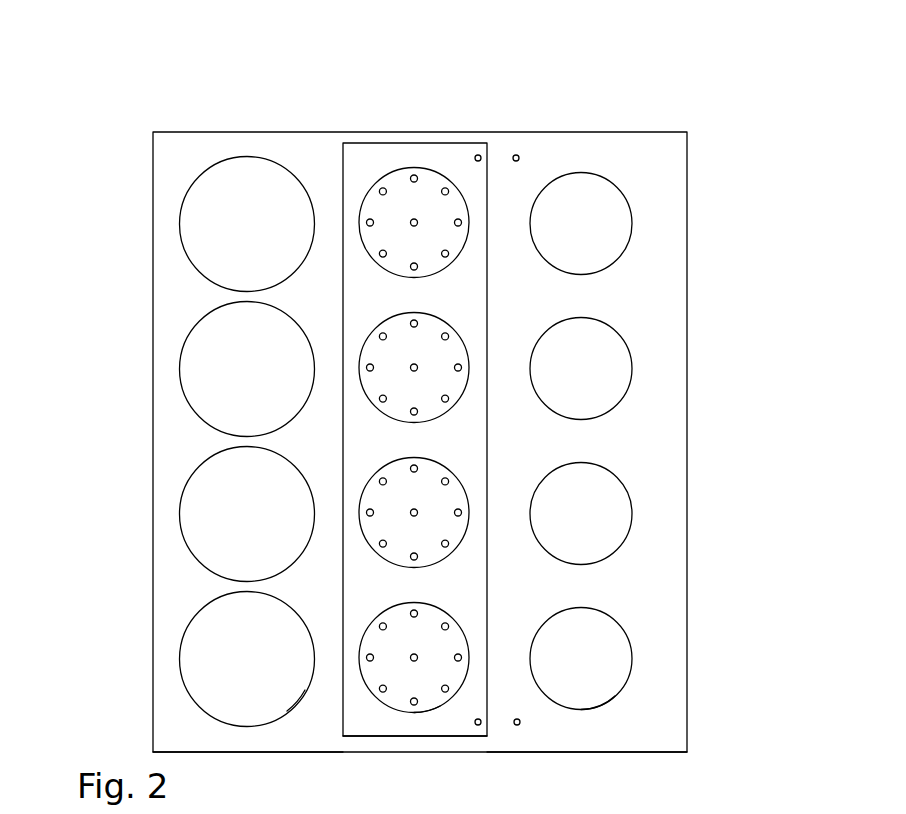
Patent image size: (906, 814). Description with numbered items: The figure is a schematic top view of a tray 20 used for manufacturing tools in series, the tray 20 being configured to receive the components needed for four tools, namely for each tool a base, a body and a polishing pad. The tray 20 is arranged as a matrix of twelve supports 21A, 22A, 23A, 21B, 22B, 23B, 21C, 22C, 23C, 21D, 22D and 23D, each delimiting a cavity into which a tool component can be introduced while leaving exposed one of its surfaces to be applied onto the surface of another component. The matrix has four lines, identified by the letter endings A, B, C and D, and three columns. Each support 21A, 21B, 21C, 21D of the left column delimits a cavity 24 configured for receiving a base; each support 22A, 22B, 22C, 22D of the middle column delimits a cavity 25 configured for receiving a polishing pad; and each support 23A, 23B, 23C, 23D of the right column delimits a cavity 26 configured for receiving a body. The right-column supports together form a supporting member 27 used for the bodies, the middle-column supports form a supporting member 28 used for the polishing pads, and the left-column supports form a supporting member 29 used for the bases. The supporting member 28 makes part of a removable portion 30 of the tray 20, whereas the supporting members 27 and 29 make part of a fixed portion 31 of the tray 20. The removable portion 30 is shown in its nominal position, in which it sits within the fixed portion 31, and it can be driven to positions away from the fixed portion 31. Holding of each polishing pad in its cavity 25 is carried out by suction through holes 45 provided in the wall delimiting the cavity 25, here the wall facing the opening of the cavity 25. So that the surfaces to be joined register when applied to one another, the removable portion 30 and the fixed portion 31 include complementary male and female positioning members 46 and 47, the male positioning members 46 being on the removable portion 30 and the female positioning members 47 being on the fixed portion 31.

The tray 20 is at (128, 108).
The support 21A is at (163, 647).
The support 21B is at (163, 508).
The support 21C is at (163, 370).
The support 21D is at (163, 230).
The support 22A is at (442, 678).
The support 22B is at (479, 507).
The support 22C is at (480, 367).
The support 22D is at (480, 225).
The support 23A is at (640, 655).
The support 23B is at (640, 508).
The support 23C is at (640, 360).
The support 23D is at (640, 207).
The cavity 24 is at (290, 697).
The cavity 25 is at (430, 700).
The cavity 26 is at (600, 695).
The supporting member 27 is at (587, 737).
The supporting member 28 is at (402, 728).
The supporting member 29 is at (250, 738).
The removable portion 30 is at (359, 150).
The fixed portion 31 is at (300, 148).
The holes 45 is at (412, 655).
The male positioning members 46 is at (478, 154).
The female positioning members 47 is at (516, 154).